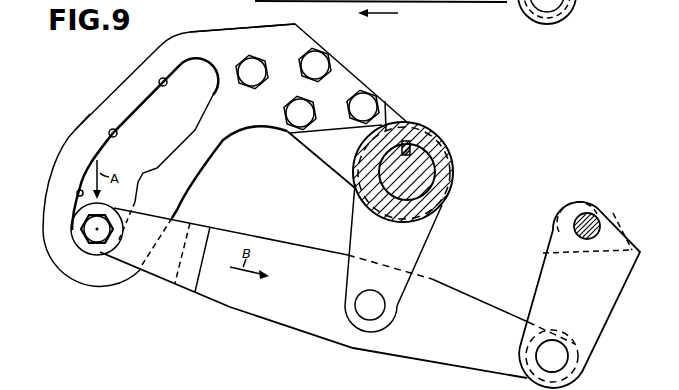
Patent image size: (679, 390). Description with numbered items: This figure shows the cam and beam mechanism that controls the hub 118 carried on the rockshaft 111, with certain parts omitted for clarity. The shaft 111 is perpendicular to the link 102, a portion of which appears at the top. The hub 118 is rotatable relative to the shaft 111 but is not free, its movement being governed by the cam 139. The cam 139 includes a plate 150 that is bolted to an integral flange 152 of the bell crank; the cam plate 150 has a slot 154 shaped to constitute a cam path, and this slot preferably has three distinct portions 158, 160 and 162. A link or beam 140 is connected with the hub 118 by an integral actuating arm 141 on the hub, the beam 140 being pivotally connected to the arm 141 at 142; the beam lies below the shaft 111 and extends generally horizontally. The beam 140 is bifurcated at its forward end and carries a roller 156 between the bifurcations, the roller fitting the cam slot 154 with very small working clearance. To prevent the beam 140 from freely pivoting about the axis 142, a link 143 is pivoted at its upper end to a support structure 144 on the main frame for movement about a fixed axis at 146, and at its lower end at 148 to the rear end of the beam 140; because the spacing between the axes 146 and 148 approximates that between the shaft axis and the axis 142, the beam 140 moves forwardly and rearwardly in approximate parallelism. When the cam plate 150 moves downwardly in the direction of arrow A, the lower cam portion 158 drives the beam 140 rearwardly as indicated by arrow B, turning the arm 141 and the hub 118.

The link 102 is at (468, 1).
The rockshaft 111 is at (427, 178).
The hub 118 is at (437, 157).
The cam 139 is at (76, 117).
The beam 140 is at (299, 250).
The actuating arm 141 is at (418, 247).
The pivot axis 142 is at (365, 305).
The link 143 is at (540, 288).
The support structure 144 is at (536, 250).
The fixed pivot axis 146 is at (593, 218).
The lower pivot 148 is at (558, 358).
The cam plate 150 is at (221, 43).
The flange 152 is at (320, 152).
The cam slot 154 is at (110, 148).
The roller 156 is at (138, 192).
The lower cam portion 158 is at (77, 194).
The cam slot portion 160 is at (110, 130).
The cam slot portion 162 is at (160, 79).